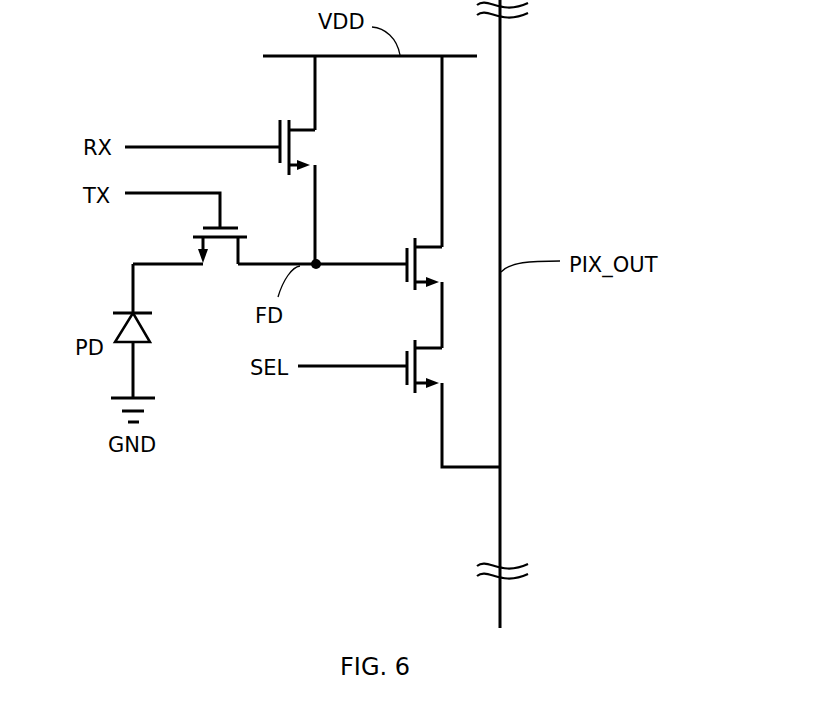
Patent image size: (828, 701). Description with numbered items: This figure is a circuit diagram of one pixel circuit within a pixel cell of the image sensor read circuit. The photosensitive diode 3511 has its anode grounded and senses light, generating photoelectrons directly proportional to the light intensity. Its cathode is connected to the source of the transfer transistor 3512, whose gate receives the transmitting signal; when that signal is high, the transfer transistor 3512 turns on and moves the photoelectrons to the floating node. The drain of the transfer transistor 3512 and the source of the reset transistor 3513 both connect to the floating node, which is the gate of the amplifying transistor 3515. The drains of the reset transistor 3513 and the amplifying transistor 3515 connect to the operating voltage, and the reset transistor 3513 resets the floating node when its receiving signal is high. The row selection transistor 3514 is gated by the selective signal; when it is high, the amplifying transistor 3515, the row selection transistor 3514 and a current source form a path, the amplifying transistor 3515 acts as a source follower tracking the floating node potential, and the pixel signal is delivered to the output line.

The photosensitive diode 3511 is at (152, 340).
The transfer transistor 3512 is at (222, 228).
The reset transistor 3513 is at (281, 134).
The row selection transistor 3514 is at (416, 388).
The amplifying transistor 3515 is at (406, 250).